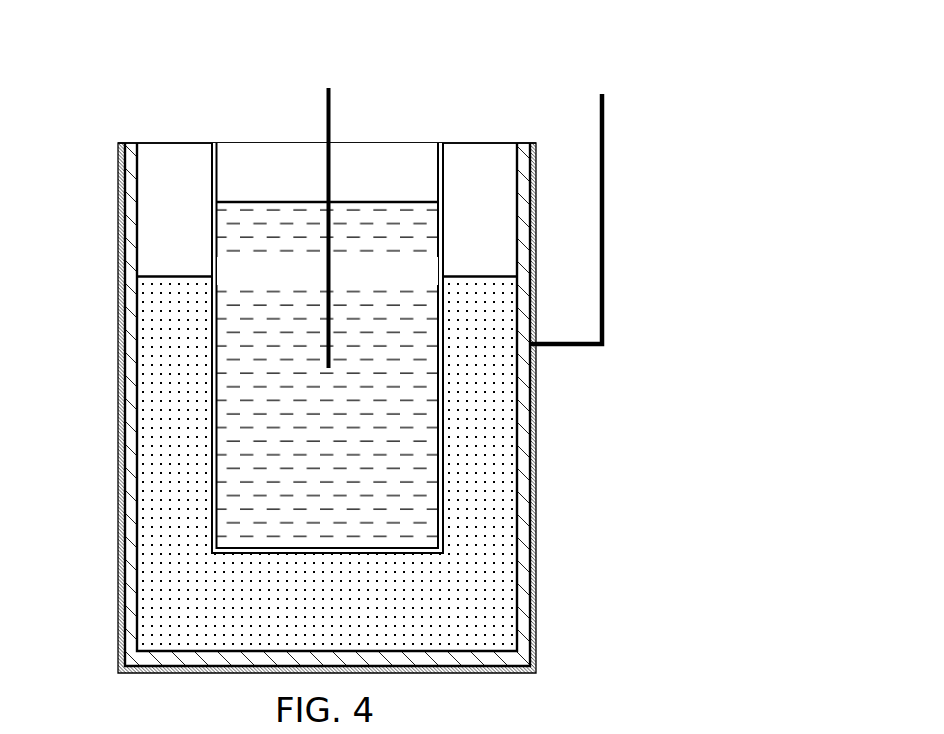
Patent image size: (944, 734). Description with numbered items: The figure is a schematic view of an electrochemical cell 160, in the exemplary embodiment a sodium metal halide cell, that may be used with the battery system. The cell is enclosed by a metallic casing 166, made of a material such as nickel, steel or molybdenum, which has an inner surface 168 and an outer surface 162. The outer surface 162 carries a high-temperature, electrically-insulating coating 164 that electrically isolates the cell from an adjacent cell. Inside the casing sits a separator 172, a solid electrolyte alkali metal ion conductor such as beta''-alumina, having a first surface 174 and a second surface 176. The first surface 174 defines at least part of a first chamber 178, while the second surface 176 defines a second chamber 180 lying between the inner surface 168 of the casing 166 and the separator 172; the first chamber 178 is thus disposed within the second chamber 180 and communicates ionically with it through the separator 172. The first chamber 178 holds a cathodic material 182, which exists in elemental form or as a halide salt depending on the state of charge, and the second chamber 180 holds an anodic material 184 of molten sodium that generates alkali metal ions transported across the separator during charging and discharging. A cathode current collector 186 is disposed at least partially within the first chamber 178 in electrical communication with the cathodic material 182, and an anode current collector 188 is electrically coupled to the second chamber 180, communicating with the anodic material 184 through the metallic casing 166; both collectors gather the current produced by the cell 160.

The electrochemical cell 160 is at (592, 65).
The outer surface 162 is at (536, 474).
The electrically-insulating coating 164 is at (118, 315).
The metallic casing 166 is at (525, 417).
The inner surface 168 is at (516, 540).
The separator 172 is at (453, 217).
The first surface 174 is at (430, 245).
The second surface 176 is at (443, 263).
The first chamber 178 is at (240, 444).
The second chamber 180 is at (162, 617).
The cathodic material 182 is at (346, 490).
The anodic material 184 is at (349, 619).
The cathode current collector 186 is at (327, 112).
The anode current collector 188 is at (600, 113).